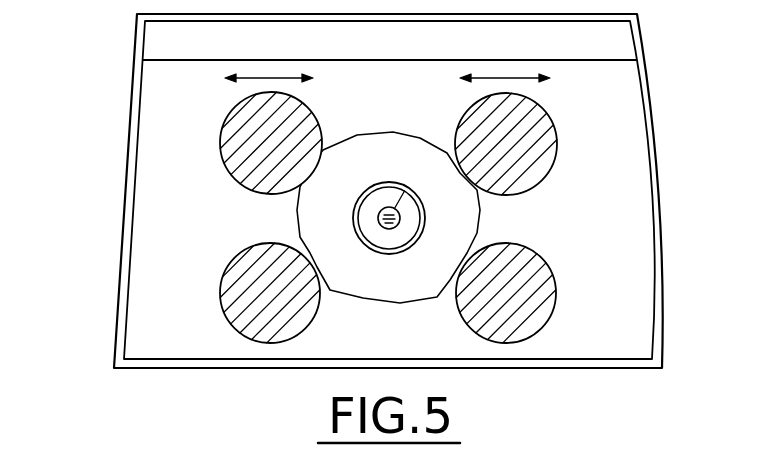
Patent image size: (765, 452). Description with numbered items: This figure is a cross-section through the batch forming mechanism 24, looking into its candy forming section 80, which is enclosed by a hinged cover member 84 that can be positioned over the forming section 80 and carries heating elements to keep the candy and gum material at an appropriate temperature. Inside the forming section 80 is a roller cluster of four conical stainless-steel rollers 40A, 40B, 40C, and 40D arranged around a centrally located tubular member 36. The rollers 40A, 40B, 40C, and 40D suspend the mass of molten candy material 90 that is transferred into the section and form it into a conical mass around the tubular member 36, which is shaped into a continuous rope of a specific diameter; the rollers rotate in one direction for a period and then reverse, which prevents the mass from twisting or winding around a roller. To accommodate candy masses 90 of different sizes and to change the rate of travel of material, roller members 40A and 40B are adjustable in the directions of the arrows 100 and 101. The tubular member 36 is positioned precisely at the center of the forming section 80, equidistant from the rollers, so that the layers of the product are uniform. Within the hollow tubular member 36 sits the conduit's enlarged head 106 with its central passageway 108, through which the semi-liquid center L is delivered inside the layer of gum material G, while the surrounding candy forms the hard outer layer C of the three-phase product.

The batch forming mechanism 24 is at (120, 183).
The tubular member 36 is at (425, 216).
The conical roller 40A is at (235, 115).
The conical roller 40B is at (540, 120).
The conical roller 40C is at (237, 313).
The conical roller 40D is at (553, 298).
The candy forming section 80 is at (650, 127).
The hinged cover member 84 is at (642, 42).
The mass of molten candy material 90 is at (303, 199).
The arrow 100 is at (258, 78).
The arrow 101 is at (510, 78).
The enlarged head 106 is at (380, 226).
The central passageway 108 is at (392, 229).
The hard outer layer of candy material C is at (380, 299).
The soft gum or bubble gum material G is at (392, 184).
The semi-liquid center L is at (405, 190).